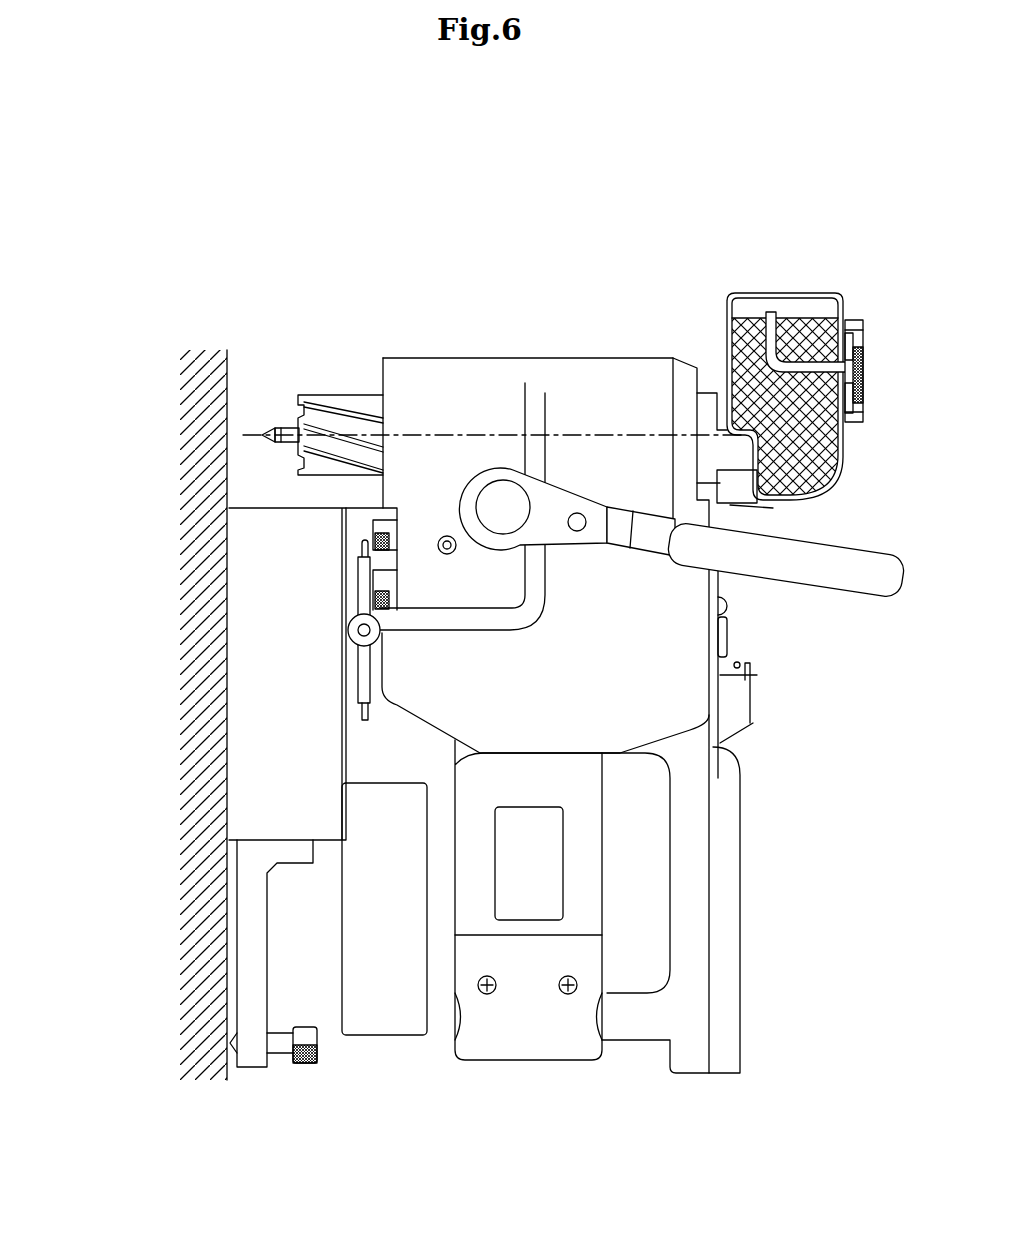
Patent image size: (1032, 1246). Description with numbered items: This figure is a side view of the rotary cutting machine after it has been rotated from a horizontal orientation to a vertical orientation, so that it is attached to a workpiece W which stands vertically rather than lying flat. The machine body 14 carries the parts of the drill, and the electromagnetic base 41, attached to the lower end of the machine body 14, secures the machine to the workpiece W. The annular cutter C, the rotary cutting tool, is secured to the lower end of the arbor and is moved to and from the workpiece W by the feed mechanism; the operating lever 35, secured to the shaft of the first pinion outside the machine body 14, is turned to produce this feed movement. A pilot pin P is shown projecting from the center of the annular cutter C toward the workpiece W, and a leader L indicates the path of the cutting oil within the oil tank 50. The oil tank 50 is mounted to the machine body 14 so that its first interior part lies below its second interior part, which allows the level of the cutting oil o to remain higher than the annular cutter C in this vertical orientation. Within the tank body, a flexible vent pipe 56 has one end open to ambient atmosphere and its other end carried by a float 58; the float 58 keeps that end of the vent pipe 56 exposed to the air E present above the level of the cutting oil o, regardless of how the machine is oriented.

The machine body 14 is at (548, 346).
The operating lever 35 is at (823, 580).
The electromagnetic base 41 is at (243, 738).
The oil tank 50 is at (782, 326).
The flexible vent pipe 56 is at (823, 315).
The float 58 is at (758, 317).
The workpiece W is at (232, 384).
The pilot pin P is at (282, 428).
The annular cutter C is at (347, 395).
The air E is at (763, 302).
The lubricant passage L is at (802, 317).
The cutting oil o is at (808, 470).